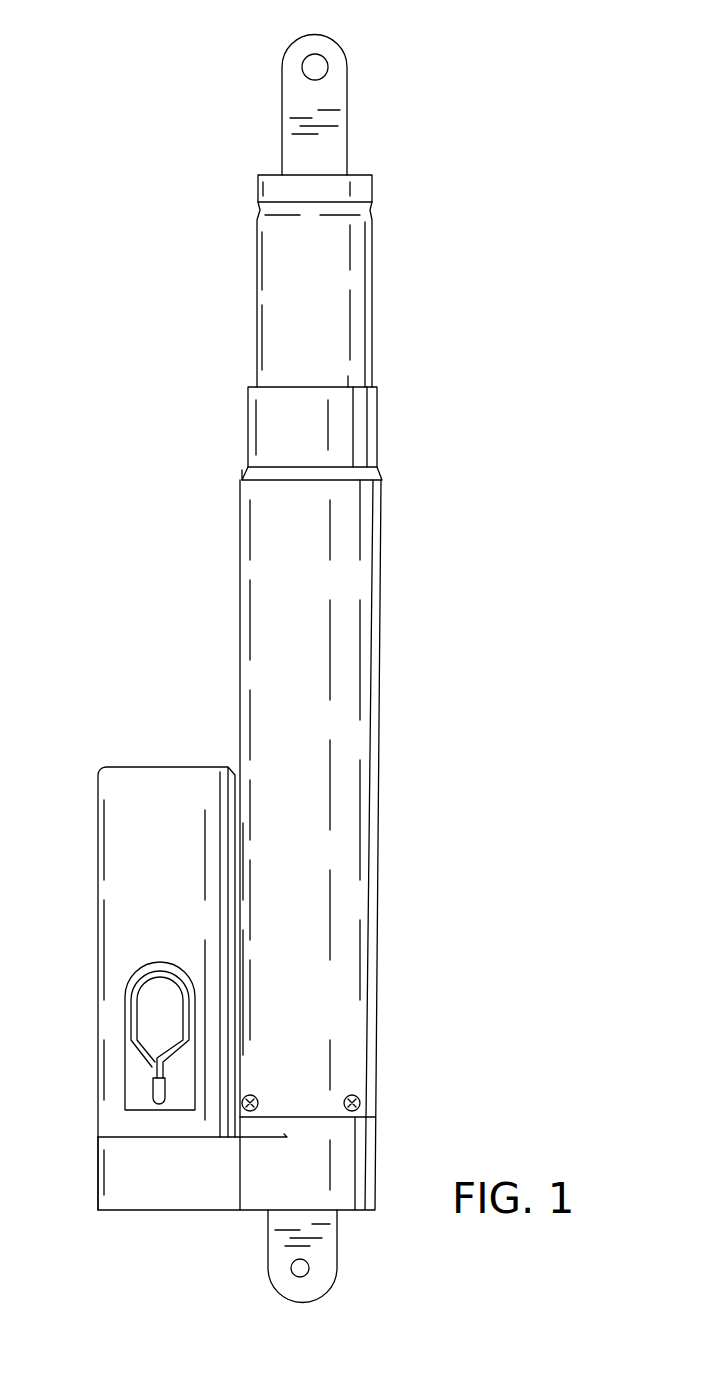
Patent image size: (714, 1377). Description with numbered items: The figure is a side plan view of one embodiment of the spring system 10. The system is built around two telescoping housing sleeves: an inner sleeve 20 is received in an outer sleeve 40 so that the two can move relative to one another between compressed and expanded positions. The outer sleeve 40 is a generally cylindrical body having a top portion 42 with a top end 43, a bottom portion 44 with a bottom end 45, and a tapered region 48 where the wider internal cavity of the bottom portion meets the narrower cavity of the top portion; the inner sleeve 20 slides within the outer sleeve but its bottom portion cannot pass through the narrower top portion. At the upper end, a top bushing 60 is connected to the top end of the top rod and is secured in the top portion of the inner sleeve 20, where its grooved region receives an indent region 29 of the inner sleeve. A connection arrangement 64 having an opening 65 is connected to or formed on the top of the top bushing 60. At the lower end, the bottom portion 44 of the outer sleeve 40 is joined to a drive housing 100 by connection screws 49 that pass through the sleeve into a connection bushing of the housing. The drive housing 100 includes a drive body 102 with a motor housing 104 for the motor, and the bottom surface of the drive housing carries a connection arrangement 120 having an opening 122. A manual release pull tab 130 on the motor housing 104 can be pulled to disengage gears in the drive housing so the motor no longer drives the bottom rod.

The spring system 10 is at (460, 510).
The inner sleeve 20 is at (376, 308).
The indent region 29 is at (375, 217).
The outer sleeve 40 is at (382, 724).
The top portion 42 is at (362, 435).
The top end 43 is at (348, 386).
The bottom portion 44 is at (348, 1048).
The bottom end 45 is at (330, 1118).
The tapered region 48 is at (246, 468).
The connection screws 49 is at (254, 1094).
The top bushing 60 is at (375, 194).
The connection arrangement 64 is at (337, 142).
The opening 65 is at (303, 68).
The drive housing 100 is at (146, 762).
The drive body 102 is at (95, 1195).
The motor housing 104 is at (107, 898).
The connection arrangement 120 is at (338, 1240).
The opening 122 is at (309, 1268).
The manual release pull tab 130 is at (128, 990).